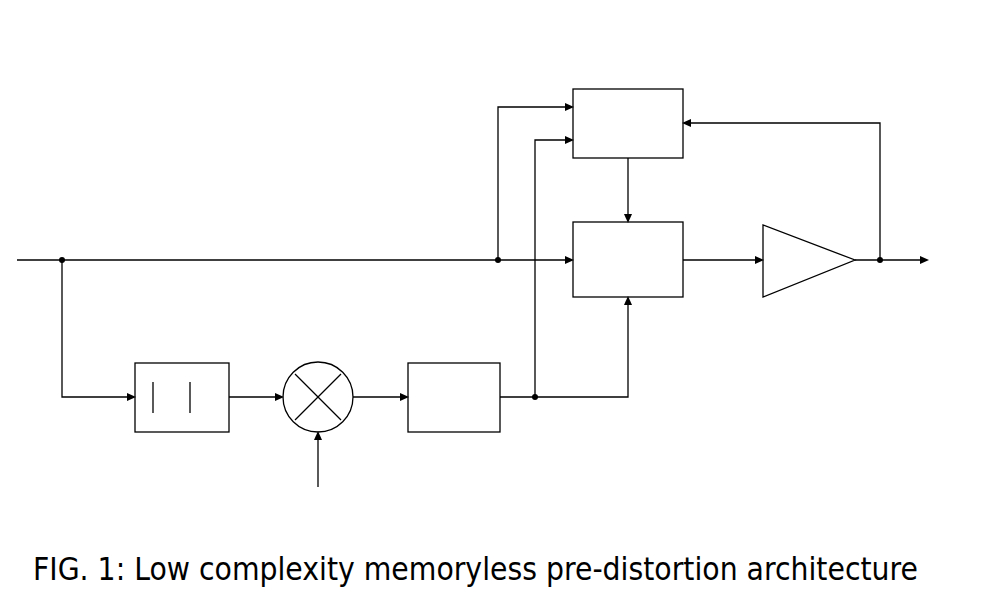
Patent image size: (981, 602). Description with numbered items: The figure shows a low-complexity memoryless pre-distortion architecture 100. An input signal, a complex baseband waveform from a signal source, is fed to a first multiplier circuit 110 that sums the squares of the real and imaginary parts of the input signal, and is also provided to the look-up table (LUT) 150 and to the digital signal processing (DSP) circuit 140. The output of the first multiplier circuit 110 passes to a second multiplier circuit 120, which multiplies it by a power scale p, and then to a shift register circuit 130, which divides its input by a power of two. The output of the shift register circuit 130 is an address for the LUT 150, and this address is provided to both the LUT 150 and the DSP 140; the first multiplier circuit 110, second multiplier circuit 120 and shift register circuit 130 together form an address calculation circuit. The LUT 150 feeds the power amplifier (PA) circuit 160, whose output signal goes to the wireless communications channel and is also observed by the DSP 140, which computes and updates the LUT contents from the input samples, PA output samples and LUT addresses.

The memoryless pre-distortion architecture 100 is at (396, 44).
The first multiplier circuit 110 is at (182, 384).
The second multiplier circuit 120 is at (318, 381).
The shift register circuit 130 is at (454, 384).
The digital signal processing (DSP) circuit 140 is at (628, 109).
The look-up table (LUT) 150 is at (628, 246).
The power amplifier (PA) circuit 160 is at (809, 249).